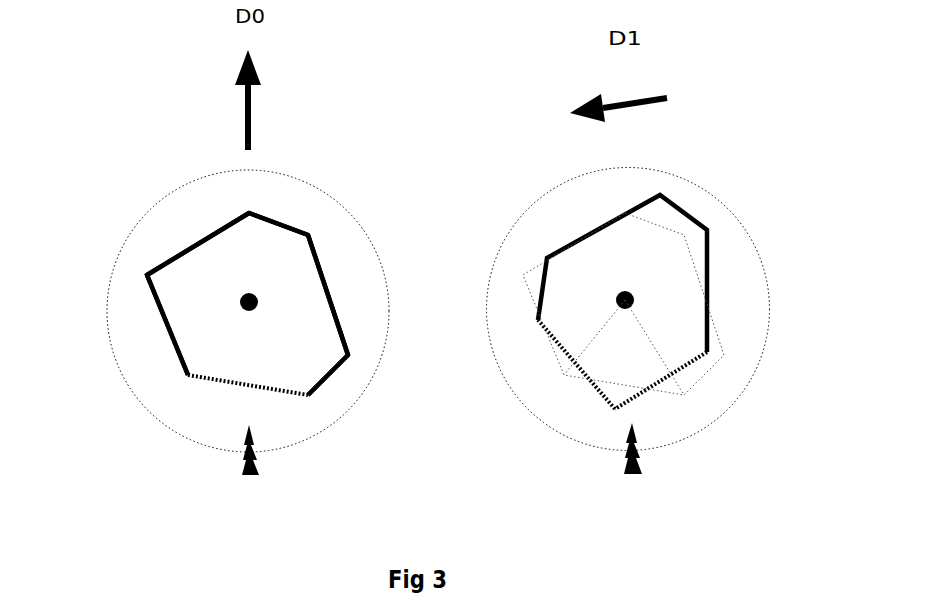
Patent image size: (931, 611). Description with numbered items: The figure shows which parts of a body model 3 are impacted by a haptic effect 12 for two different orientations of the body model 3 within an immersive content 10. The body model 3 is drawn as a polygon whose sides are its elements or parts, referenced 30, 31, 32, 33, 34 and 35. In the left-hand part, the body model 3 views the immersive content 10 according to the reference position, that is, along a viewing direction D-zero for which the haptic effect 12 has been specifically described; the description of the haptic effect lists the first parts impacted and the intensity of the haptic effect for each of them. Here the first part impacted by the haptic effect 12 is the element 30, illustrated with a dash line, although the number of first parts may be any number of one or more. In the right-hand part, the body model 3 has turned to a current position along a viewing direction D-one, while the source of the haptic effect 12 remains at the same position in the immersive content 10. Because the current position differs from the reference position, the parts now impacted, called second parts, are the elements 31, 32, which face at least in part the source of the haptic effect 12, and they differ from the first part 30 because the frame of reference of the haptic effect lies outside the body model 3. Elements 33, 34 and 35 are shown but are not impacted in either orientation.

The body model 3 is at (172, 245).
The immersive content 10 is at (383, 262).
The haptic effect 12 is at (243, 475).
The first part of the body model 30 is at (208, 380).
The element of the body model 31 is at (170, 340).
The element of the body model 32 is at (197, 238).
The element of the body model 33 is at (277, 220).
The element of the body model 34 is at (338, 296).
The element of the body model 35 is at (340, 372).